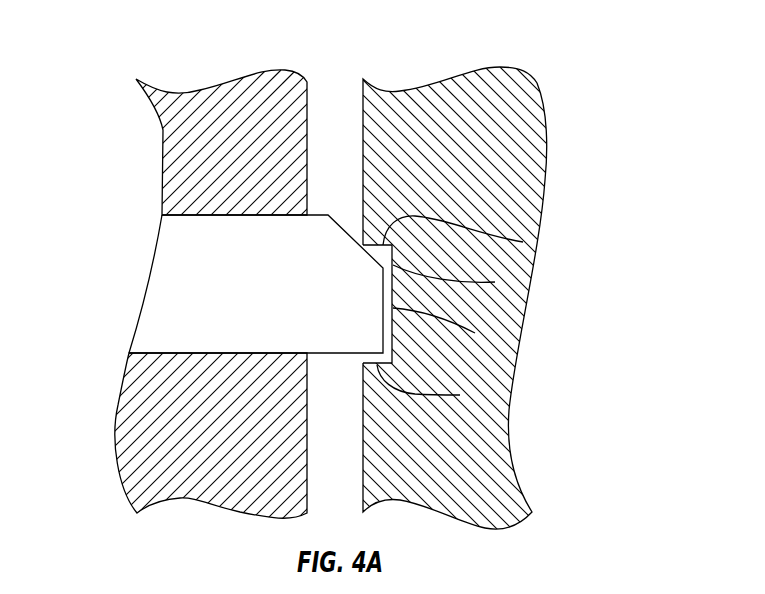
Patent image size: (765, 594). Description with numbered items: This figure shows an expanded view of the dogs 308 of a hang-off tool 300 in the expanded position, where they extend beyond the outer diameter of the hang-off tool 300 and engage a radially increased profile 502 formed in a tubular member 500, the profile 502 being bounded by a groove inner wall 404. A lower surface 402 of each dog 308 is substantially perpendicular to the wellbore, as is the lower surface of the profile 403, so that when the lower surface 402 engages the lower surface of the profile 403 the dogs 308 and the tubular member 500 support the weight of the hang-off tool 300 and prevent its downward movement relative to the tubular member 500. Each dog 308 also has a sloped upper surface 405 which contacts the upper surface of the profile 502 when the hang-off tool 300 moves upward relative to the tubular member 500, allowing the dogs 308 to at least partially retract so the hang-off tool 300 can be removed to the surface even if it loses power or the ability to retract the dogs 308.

The hang-off tool 300 is at (172, 48).
The tubular member 500 is at (522, 42).
The dogs 308 is at (292, 302).
The lower surface 402 is at (352, 357).
The lower surface of the profile 403 is at (460, 395).
The groove inner wall 404 is at (495, 282).
The sloped upper surface 405 is at (523, 242).
The radially increased profile 502 is at (475, 333).